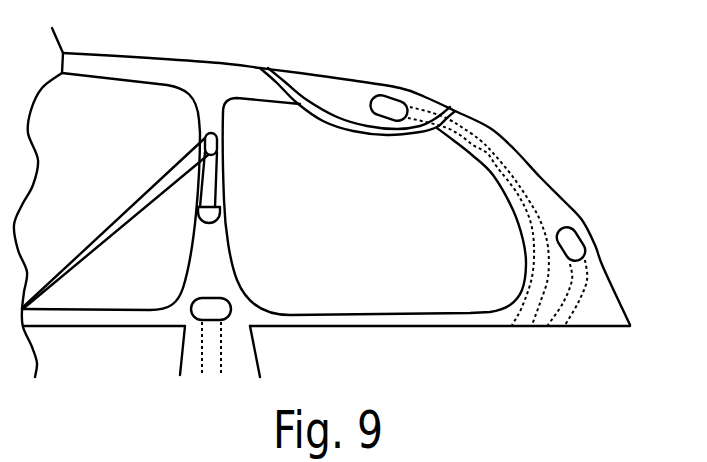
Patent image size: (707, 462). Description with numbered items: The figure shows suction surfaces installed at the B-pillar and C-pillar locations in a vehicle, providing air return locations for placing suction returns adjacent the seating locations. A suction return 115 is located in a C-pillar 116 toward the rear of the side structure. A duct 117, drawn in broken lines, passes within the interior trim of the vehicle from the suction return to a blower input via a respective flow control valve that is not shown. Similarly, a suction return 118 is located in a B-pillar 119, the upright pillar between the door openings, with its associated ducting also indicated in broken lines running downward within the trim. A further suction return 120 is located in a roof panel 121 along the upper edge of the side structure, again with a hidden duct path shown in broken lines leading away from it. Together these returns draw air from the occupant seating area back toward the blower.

The suction return 115 is at (580, 238).
The C-pillar 116 is at (557, 213).
The duct 117 is at (583, 290).
The suction return 118 is at (192, 307).
The B-pillar 119 is at (213, 268).
The suction return 120 is at (396, 102).
The roof panel 121 is at (320, 86).